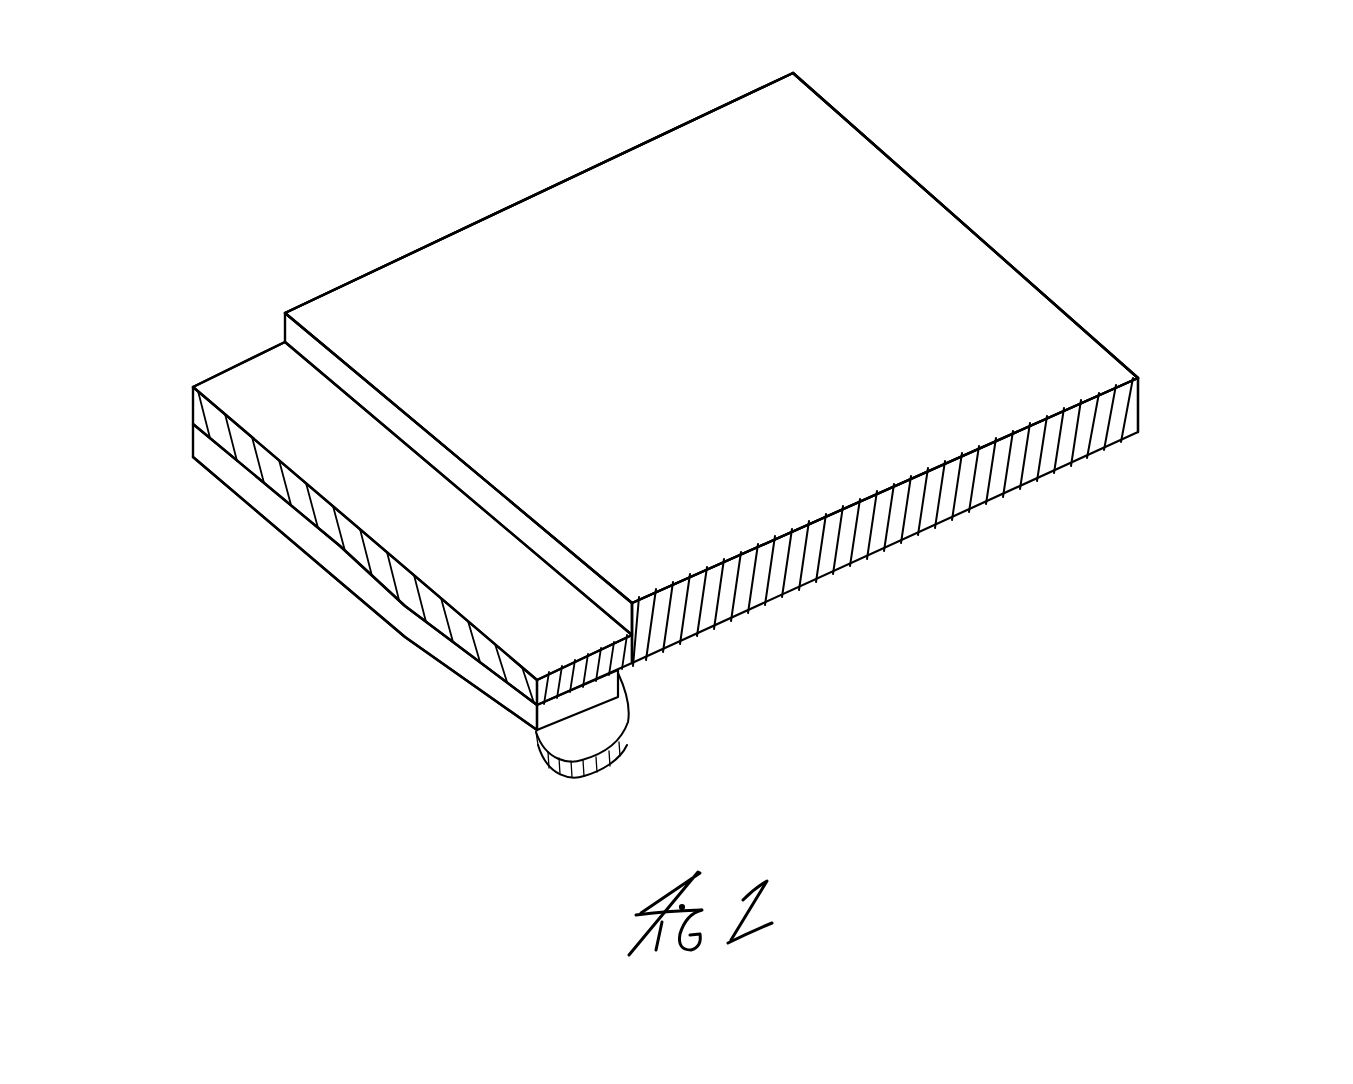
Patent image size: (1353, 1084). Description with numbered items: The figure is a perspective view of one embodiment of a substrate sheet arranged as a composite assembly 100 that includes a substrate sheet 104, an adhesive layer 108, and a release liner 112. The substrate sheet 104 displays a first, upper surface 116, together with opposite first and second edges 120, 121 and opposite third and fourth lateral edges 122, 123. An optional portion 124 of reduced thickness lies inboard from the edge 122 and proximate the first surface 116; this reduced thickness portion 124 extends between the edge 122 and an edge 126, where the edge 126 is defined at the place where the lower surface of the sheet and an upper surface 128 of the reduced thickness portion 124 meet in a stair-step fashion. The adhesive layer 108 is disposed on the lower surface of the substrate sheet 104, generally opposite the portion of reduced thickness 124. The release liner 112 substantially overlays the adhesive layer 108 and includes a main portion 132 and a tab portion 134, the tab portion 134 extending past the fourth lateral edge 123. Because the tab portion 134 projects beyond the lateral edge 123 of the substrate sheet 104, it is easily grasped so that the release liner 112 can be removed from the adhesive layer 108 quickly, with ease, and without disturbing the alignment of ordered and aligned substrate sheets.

The composite assembly 100 is at (1180, 302).
The substrate sheet 104 is at (1128, 436).
The adhesive layer 108 is at (618, 677).
The release liner 112 is at (498, 723).
The first (upper) surface 116 is at (942, 230).
The first edge 120 is at (1030, 277).
The second edge 121 is at (193, 405).
The third (lateral) edge 122 is at (453, 232).
The fourth (lateral) edge 123 is at (800, 583).
The reduced thickness portion 124 is at (220, 372).
The edge 126 is at (283, 330).
The upper surface of the reduced thickness portion 128 is at (380, 466).
The main portion 132 is at (372, 615).
The tab portion 134 is at (597, 777).